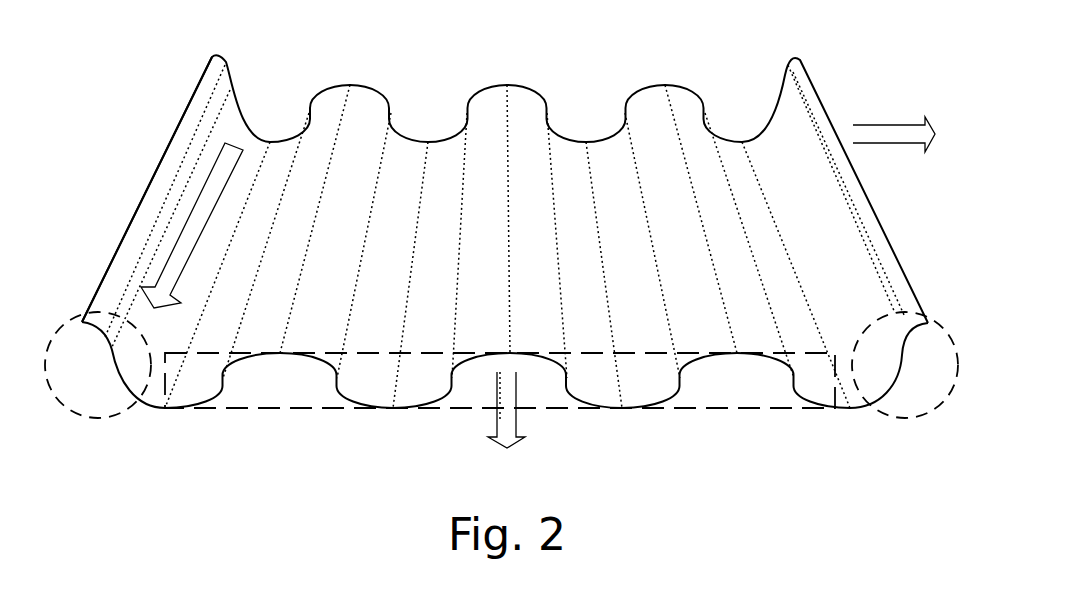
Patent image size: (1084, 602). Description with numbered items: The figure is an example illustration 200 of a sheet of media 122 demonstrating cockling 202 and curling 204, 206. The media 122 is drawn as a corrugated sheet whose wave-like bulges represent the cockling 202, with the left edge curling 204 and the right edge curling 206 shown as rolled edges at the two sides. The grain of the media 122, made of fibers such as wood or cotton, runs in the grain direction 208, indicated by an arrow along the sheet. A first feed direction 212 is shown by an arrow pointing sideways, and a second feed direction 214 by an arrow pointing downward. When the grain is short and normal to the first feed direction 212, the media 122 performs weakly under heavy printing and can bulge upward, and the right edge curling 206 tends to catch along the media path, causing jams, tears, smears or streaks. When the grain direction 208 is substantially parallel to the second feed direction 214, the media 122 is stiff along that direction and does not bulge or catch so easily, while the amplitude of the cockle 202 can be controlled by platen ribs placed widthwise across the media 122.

The illustration 200 is at (819, 60).
The media 122 is at (196, 91).
The cockling 202 is at (273, 410).
The curling 204 is at (78, 416).
The right edge curling 206 is at (907, 418).
The grain direction 208 is at (232, 152).
The first feed direction 212 is at (873, 120).
The second feed direction 214 is at (497, 430).